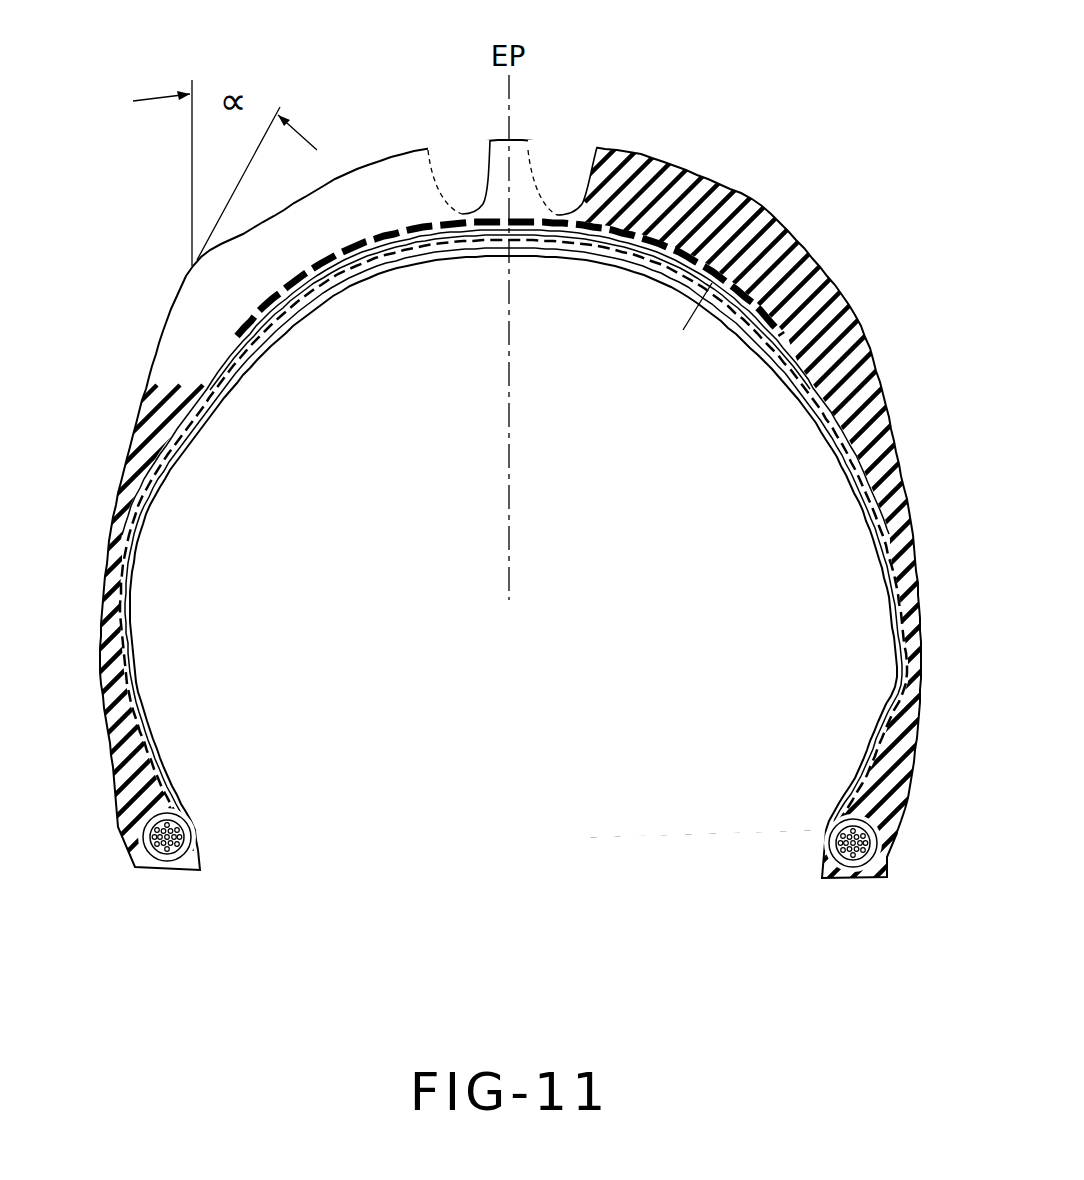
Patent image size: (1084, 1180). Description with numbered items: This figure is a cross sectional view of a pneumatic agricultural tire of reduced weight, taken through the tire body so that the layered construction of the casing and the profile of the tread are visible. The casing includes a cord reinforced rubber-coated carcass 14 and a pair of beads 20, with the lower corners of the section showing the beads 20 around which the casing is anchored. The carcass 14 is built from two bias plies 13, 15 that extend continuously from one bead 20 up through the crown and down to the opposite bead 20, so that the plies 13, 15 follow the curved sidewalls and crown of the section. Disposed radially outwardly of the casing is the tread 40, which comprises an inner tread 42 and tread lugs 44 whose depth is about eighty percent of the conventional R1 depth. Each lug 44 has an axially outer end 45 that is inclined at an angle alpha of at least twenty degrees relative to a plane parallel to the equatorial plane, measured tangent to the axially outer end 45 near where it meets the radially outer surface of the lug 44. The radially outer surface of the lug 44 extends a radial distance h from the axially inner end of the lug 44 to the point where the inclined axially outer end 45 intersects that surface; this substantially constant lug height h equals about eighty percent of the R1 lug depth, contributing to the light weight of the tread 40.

The bias ply 13 is at (833, 450).
The cord reinforced rubber-coated carcass 14 is at (610, 275).
The bias ply 15 is at (803, 403).
The bead 20 is at (843, 840).
The tread 40 is at (697, 178).
The inner tread 42 is at (488, 213).
The tread lug 44 is at (592, 183).
The axially outer end 45 is at (163, 330).
The radial distance (lug height) h is at (760, 205).